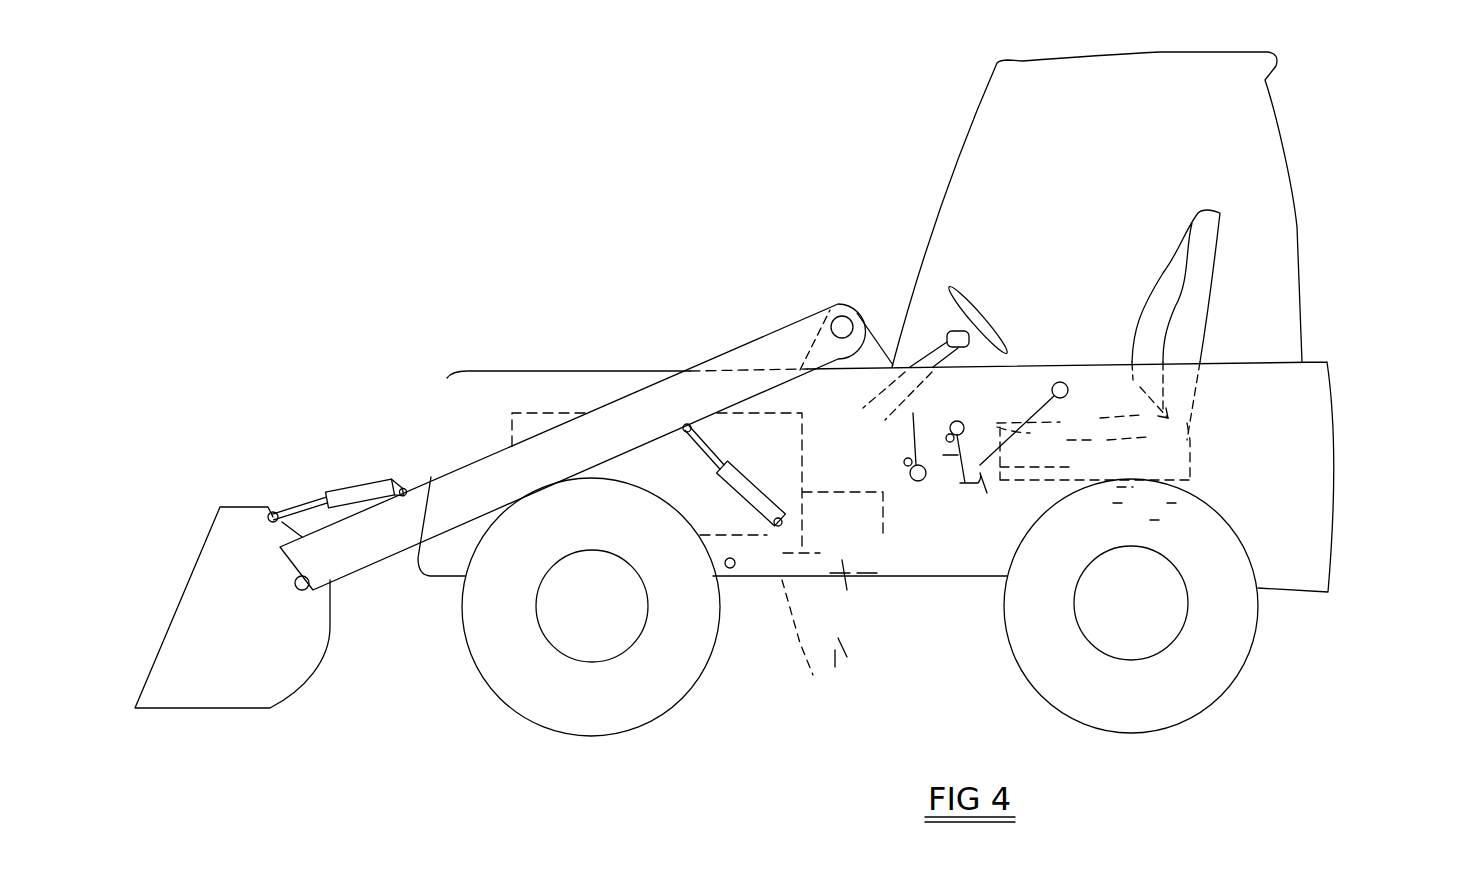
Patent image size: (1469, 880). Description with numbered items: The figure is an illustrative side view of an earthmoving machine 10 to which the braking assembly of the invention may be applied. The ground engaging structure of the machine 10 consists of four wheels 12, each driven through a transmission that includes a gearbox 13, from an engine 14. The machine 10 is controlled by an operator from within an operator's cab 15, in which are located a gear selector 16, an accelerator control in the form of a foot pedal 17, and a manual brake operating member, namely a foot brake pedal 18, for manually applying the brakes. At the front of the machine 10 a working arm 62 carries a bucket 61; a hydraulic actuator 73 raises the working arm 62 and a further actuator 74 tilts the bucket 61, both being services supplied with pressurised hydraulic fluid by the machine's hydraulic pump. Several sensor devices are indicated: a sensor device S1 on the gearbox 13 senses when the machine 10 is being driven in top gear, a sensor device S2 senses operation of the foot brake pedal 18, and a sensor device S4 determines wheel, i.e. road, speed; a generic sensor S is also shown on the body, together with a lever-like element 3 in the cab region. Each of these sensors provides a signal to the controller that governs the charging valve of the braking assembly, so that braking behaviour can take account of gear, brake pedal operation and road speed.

The earthmoving machine 10 is at (1322, 192).
The wheels 12 is at (1247, 780).
The gearbox 13 is at (853, 643).
The engine 14 is at (813, 675).
The operator's cab 15 is at (1280, 133).
The gear selector 16 is at (1040, 405).
The foot pedal 17 is at (898, 437).
The foot brake pedal 18 is at (953, 483).
The pedal lever 3 is at (910, 462).
The bucket 61 is at (235, 507).
The working arm 62 is at (662, 387).
The actuator 73 is at (735, 502).
The actuator 74 is at (350, 490).
The sensor S is at (861, 576).
The sensor device S1 is at (808, 503).
The sensor device S2 is at (948, 435).
The sensor device S4 is at (736, 568).